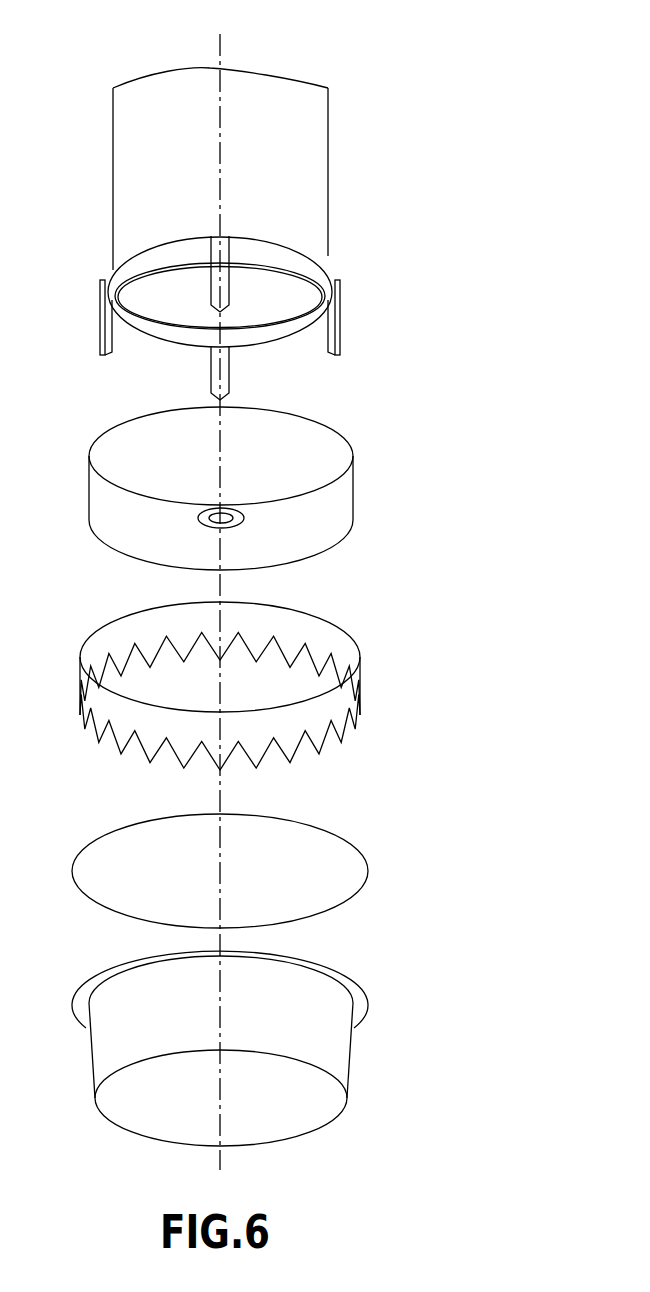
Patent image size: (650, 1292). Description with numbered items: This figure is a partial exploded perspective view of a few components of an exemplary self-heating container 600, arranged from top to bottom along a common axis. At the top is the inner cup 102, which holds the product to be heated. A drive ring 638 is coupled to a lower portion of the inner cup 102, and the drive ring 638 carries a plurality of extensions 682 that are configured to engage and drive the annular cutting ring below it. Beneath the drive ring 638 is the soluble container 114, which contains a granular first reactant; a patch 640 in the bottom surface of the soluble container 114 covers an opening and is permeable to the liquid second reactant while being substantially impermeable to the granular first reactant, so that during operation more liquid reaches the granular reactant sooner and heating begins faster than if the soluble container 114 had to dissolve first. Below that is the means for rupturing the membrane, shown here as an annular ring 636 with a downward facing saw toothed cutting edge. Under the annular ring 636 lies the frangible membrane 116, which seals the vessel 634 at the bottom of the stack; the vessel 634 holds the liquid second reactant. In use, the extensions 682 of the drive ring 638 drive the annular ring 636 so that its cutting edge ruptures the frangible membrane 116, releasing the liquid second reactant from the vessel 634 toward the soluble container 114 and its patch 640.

The self-heating container 600 is at (526, 114).
The inner cup 102 is at (331, 150).
The drive ring 638 is at (316, 265).
The extensions 682 is at (103, 339).
The soluble container 114 is at (318, 445).
The patch 640 is at (252, 526).
The annular ring 636 is at (318, 630).
The frangible membrane 116 is at (323, 820).
The vessel 634 is at (318, 1041).